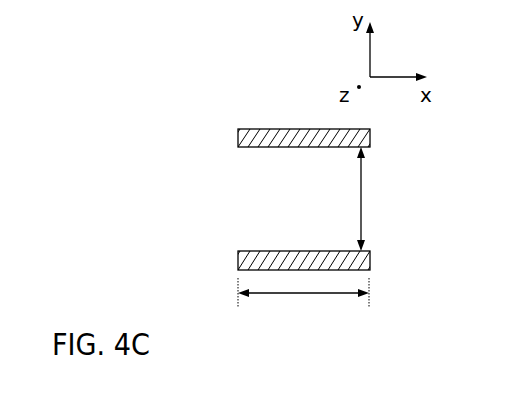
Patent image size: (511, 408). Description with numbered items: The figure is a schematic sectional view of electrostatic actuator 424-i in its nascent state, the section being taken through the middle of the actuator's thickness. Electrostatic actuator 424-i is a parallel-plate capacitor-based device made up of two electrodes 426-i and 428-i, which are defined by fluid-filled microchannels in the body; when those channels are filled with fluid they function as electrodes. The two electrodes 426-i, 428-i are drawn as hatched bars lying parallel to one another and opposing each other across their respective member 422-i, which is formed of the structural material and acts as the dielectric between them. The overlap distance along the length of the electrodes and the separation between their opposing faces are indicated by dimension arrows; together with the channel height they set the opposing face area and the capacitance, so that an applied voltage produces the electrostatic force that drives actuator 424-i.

The electrostatic actuator 424-i is at (164, 96).
The electrode 426-i is at (239, 137).
The electrode 428-i is at (239, 258).
The member 422-i is at (341, 199).